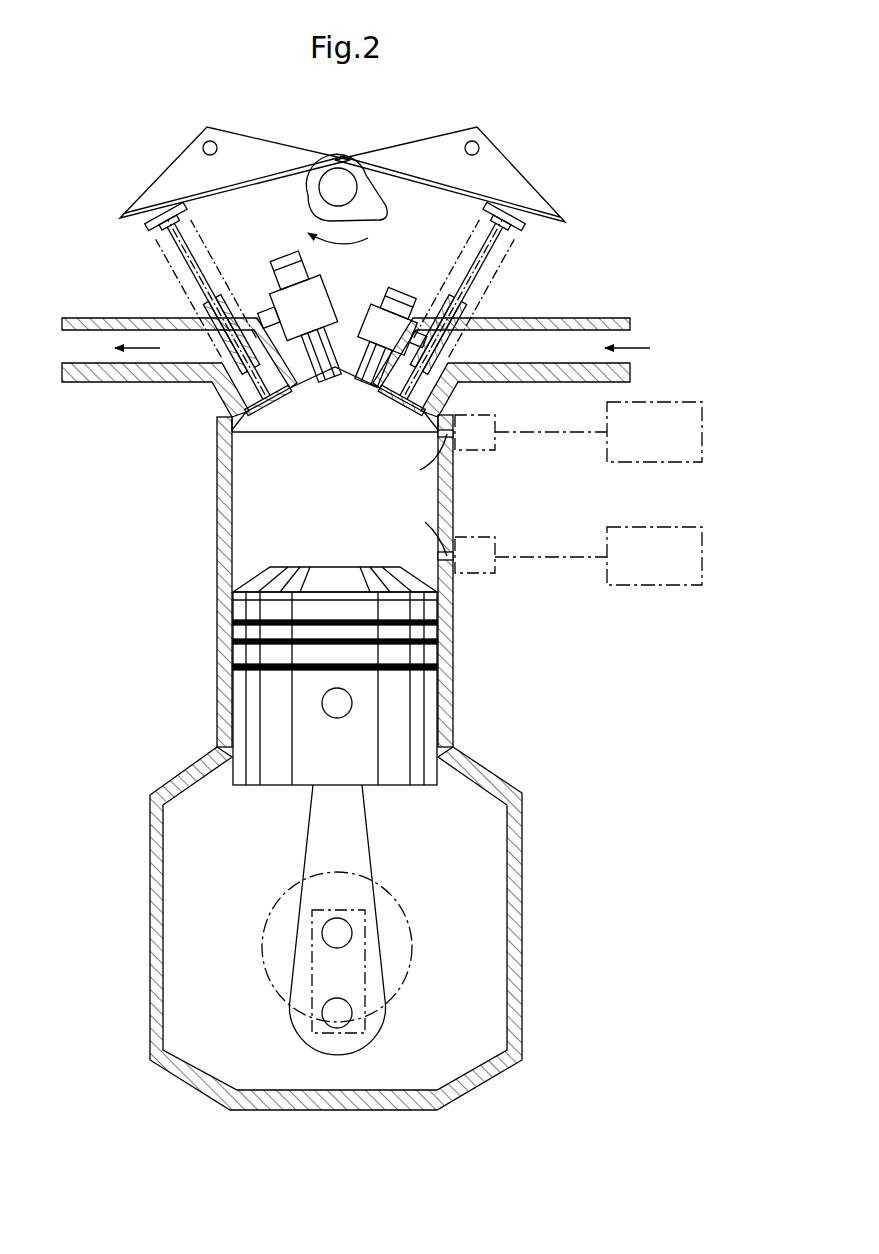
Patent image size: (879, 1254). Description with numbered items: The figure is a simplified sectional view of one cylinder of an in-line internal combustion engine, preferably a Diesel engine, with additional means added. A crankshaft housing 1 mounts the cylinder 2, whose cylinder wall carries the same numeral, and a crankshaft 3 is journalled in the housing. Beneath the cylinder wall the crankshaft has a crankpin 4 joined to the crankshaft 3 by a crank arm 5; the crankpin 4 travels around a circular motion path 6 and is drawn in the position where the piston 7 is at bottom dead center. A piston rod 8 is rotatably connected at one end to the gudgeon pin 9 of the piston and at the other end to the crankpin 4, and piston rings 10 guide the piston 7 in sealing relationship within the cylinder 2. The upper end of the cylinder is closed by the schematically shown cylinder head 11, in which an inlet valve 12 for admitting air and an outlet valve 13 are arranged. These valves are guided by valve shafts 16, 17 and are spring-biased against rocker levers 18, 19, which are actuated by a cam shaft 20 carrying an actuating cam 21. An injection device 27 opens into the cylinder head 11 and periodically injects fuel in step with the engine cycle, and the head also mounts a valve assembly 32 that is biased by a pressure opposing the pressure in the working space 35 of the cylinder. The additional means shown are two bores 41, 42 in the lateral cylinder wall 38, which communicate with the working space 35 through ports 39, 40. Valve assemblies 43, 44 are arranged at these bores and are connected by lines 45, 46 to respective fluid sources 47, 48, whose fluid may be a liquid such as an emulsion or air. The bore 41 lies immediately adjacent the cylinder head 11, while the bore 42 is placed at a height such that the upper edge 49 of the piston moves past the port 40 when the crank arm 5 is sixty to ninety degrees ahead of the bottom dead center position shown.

The crankshaft housing 1 is at (512, 942).
The cylinder 2 is at (333, 581).
The crankshaft 3 is at (340, 930).
The crankpin 4 is at (342, 1018).
The crank arm 5 is at (365, 956).
The circular motion path 6 is at (297, 878).
The piston 7 is at (317, 657).
The piston rod 8 is at (355, 835).
The gudgeon pin 9 is at (340, 710).
The piston rings 10 is at (233, 622).
The cylinder head 11 is at (230, 420).
The inlet valve 12 is at (405, 404).
The outlet valve 13 is at (268, 400).
The valve shaft 16 is at (492, 262).
The valve shaft 17 is at (200, 308).
The rocker lever 18 is at (510, 178).
The rocker lever 19 is at (178, 171).
The cam shaft 20 is at (340, 170).
The actuating cam 21 is at (372, 212).
The injection device 27 is at (305, 297).
The valve assembly 32 is at (385, 313).
The working space 35 is at (435, 497).
The lateral cylinder wall 38 is at (222, 509).
The port 39 is at (440, 434).
The port 40 is at (440, 556).
The bore 41 is at (419, 464).
The bore 42 is at (419, 530).
The valve assembly 43 is at (490, 440).
The valve assembly 44 is at (484, 565).
The line 45 is at (548, 432).
The line 46 is at (545, 557).
The fluid source 47 is at (685, 415).
The fluid source 48 is at (668, 540).
The upper edge 49 is at (284, 590).